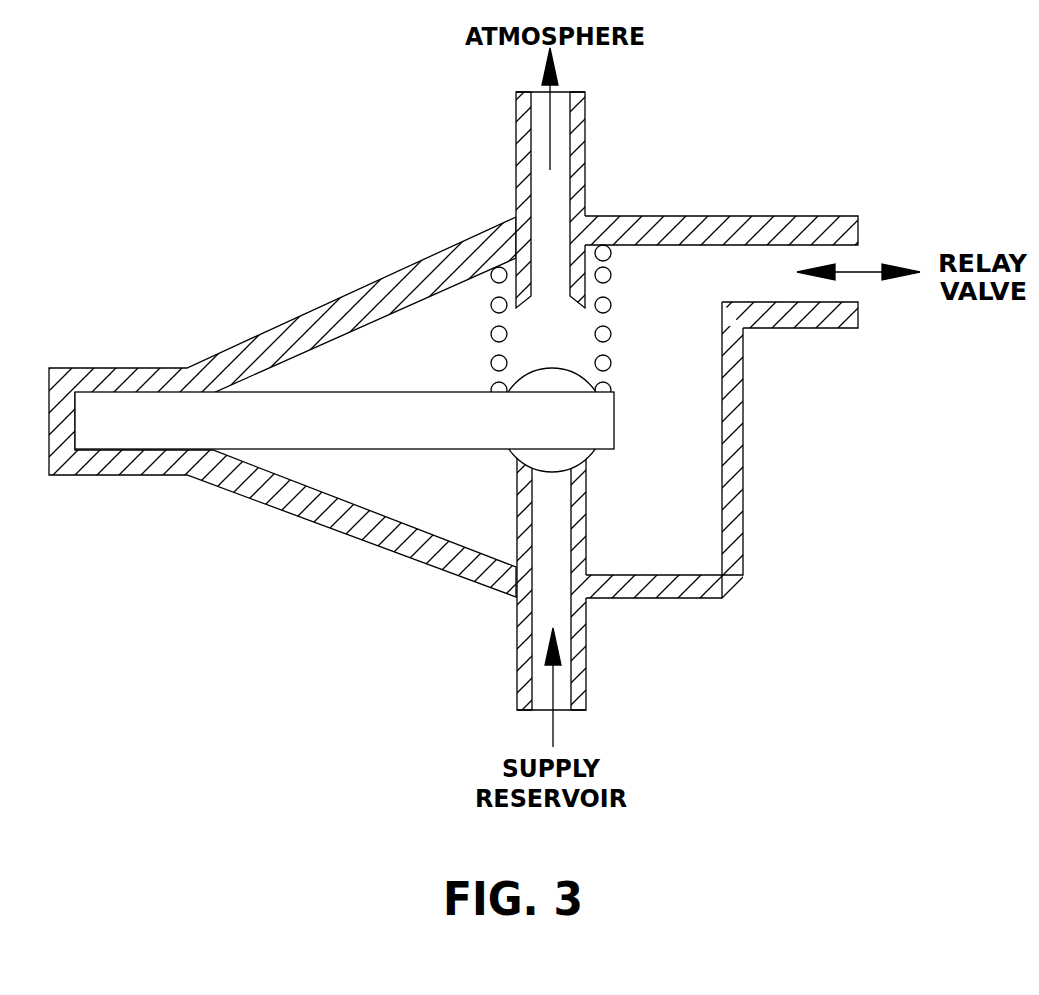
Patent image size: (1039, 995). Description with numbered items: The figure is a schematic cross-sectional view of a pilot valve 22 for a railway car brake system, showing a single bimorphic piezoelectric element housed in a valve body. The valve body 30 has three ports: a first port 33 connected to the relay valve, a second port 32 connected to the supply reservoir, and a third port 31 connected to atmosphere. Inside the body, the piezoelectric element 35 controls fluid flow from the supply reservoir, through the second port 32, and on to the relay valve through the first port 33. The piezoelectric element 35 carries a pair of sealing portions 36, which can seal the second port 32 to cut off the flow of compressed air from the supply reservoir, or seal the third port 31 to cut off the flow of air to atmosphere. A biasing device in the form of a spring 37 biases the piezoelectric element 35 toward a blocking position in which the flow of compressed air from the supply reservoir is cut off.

The pilot valve 22 is at (845, 167).
The valve body 30 is at (743, 550).
The third port 31 is at (583, 165).
The second port 32 is at (587, 660).
The first port 33 is at (833, 329).
The piezoelectric element 35 is at (140, 433).
The sealing portions 36 is at (542, 455).
The spring 37 is at (491, 301).